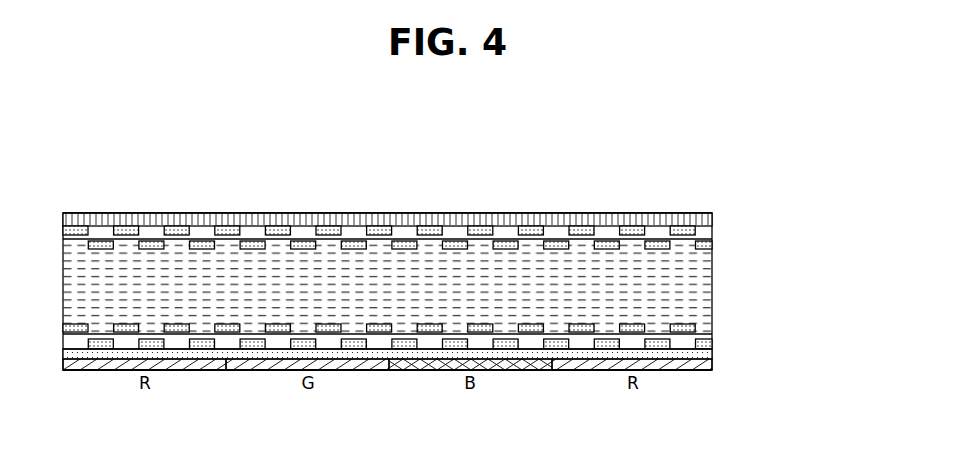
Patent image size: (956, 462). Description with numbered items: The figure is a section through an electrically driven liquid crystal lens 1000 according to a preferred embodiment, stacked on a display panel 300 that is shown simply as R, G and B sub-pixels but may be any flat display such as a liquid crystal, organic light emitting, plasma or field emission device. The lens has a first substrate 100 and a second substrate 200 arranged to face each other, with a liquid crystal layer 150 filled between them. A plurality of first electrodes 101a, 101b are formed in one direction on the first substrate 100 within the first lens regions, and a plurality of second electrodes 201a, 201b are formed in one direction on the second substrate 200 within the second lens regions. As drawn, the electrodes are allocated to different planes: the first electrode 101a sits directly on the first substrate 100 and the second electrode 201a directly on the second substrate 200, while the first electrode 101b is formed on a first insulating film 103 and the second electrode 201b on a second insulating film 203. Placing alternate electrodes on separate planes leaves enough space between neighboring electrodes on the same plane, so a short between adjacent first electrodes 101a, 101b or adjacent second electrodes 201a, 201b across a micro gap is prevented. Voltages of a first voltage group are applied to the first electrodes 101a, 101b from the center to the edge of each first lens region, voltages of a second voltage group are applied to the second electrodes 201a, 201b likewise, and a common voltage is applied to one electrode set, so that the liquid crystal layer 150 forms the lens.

The liquid crystal lens electrically driven 1000 is at (772, 215).
The second substrate 200 is at (712, 215).
The second electrode 201a is at (230, 230).
The second electrode 201b is at (300, 247).
The second insulating film 203 is at (712, 233).
The liquid crystal layer 150 is at (712, 280).
The first electrode 101a is at (253, 349).
The first electrode 101b is at (377, 332).
The first insulating film 103 is at (712, 335).
The first substrate 100 is at (712, 353).
The display panel 300 is at (712, 368).